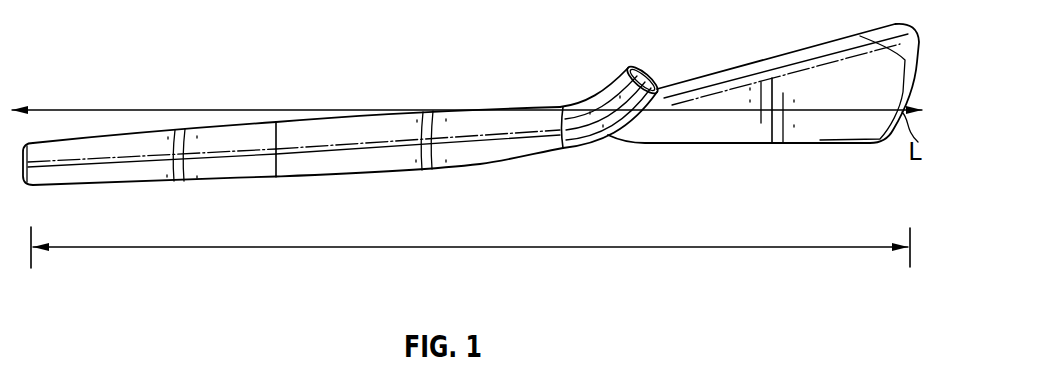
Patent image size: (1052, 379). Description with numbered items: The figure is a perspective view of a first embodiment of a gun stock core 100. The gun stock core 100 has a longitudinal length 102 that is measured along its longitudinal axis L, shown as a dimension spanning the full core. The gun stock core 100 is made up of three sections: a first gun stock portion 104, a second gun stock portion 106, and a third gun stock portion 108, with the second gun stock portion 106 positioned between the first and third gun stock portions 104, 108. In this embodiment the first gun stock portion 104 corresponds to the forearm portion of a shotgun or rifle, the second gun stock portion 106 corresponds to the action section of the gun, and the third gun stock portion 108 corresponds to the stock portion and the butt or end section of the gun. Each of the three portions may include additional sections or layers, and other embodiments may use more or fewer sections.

The gun stock core 100 is at (471, 166).
The longitudinal length 102 is at (470, 245).
The first gun stock portion 104 is at (167, 177).
The second gun stock portion 106 is at (400, 165).
The third gun stock portion 108 is at (807, 130).